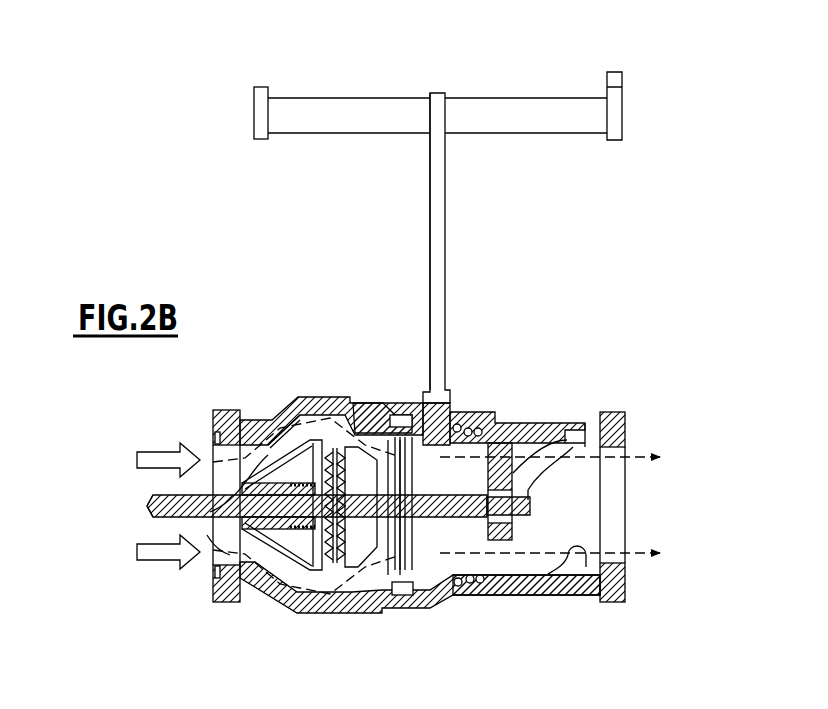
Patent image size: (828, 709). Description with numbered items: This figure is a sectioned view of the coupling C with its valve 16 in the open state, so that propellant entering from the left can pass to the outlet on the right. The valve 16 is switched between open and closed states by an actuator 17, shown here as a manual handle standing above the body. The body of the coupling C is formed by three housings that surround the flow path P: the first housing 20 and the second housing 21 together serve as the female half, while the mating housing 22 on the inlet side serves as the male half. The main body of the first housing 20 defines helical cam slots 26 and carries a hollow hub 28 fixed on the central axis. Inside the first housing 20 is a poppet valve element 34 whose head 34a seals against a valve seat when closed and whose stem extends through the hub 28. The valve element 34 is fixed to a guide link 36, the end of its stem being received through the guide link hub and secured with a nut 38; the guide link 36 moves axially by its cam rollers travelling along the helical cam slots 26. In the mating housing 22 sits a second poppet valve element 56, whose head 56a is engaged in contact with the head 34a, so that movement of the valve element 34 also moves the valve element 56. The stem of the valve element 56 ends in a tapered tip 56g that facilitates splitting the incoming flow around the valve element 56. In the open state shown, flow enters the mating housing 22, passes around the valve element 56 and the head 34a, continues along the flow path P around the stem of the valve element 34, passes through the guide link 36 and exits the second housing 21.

The valve 16 is at (363, 96).
The actuator 17 is at (446, 218).
The first housing 20 is at (428, 614).
The second housing 21 is at (496, 598).
The mating housing 22 is at (291, 606).
The helical cam slots 26 is at (560, 437).
The hub 28 is at (463, 480).
The valve element 34 is at (421, 483).
The head 34a is at (341, 450).
The guide link 36 is at (521, 441).
The nut 38 is at (532, 520).
The valve element 56 is at (268, 490).
The head 56a is at (326, 452).
The tapered tip 56g is at (147, 503).
The flow path P is at (130, 527).
The coupling C is at (212, 616).